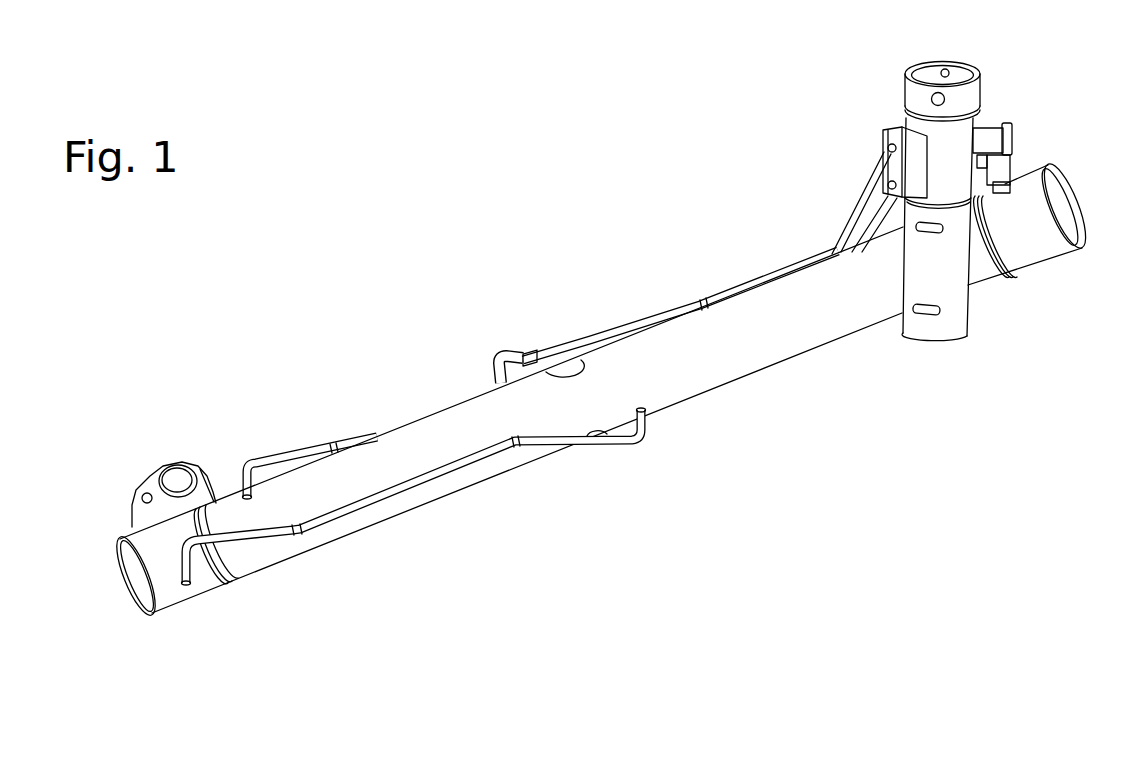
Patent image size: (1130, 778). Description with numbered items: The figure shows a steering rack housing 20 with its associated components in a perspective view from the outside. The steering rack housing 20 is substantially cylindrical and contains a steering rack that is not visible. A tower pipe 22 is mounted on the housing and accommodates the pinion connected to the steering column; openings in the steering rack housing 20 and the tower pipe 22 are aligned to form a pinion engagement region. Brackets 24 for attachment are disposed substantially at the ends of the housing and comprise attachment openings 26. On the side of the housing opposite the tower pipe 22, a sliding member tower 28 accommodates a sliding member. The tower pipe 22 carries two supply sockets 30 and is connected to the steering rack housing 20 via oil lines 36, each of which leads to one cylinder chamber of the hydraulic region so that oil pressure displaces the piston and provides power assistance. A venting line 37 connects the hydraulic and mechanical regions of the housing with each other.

The steering rack housing 20 is at (476, 242).
The tower pipe 22 is at (958, 82).
The bracket 24 is at (153, 488).
The attachment opening 26 is at (177, 481).
The sliding member tower 28 is at (885, 227).
The supply socket 30 is at (988, 128).
The oil line 36 is at (322, 447).
The venting line 37 is at (420, 480).